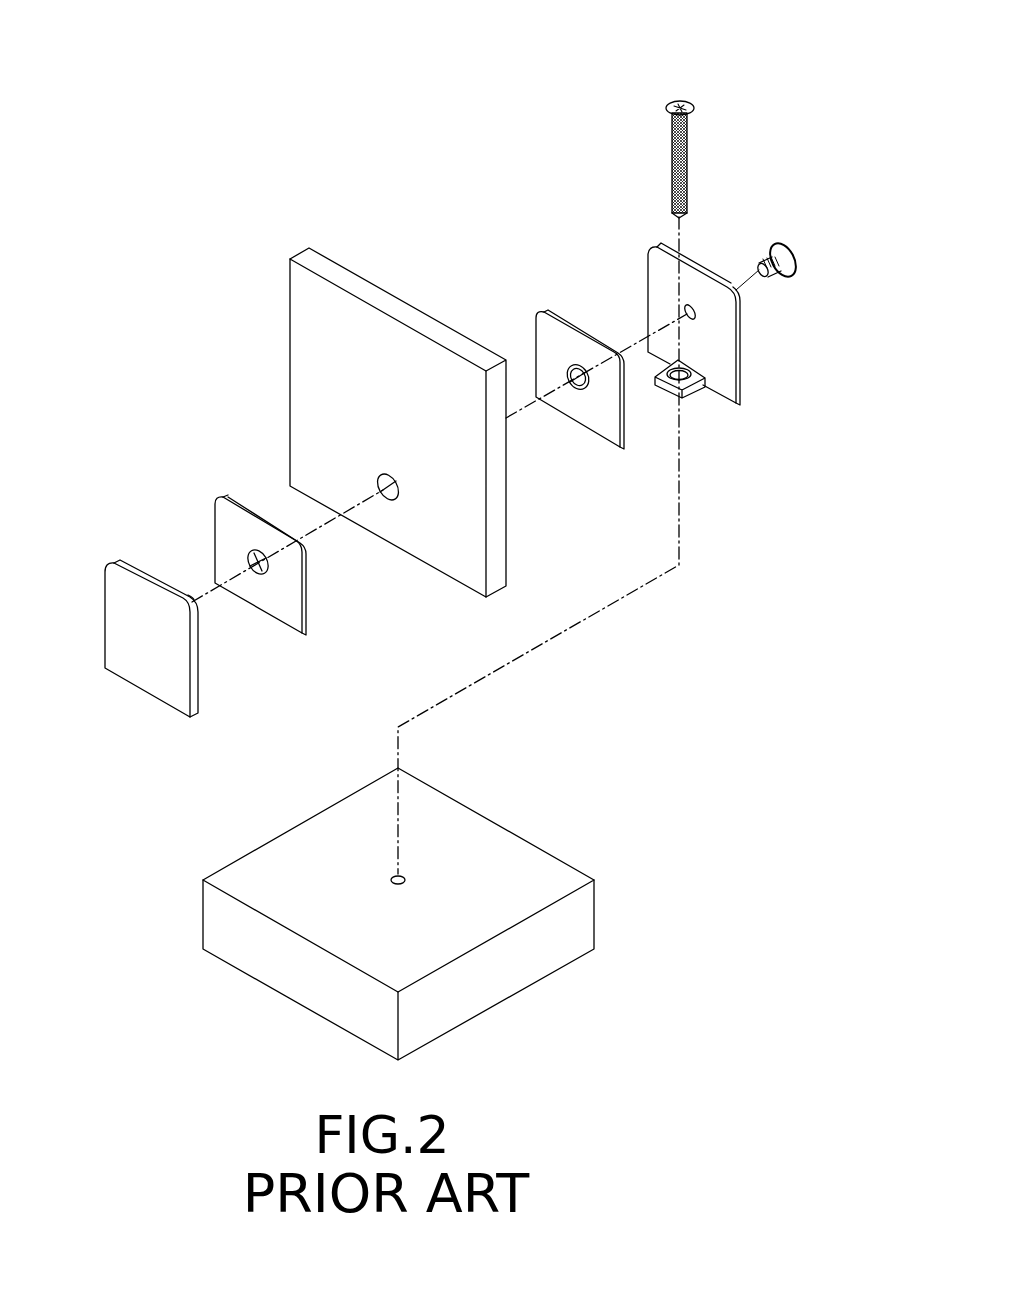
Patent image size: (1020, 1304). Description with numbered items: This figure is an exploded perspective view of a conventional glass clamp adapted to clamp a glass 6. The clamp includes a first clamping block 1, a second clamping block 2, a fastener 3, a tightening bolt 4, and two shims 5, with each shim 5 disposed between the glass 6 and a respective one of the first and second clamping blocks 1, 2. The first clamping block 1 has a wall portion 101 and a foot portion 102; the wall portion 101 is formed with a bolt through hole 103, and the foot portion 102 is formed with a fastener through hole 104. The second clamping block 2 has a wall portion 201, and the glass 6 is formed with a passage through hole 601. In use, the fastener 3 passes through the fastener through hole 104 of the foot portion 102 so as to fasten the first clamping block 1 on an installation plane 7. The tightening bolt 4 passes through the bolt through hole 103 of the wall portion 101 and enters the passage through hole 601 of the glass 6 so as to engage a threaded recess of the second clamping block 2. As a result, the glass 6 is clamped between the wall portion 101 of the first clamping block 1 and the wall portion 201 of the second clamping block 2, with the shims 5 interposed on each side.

The first clamping block 1 is at (714, 330).
The wall portion 101 is at (697, 283).
The foot portion 102 is at (696, 396).
The bolt through hole 103 is at (699, 314).
The fastener through hole 104 is at (684, 376).
The second clamping block 2 is at (132, 640).
The wall portion 201 is at (148, 675).
The fastener 3 is at (690, 100).
The tightening bolt 4 is at (786, 248).
The shim 5 is at (551, 332).
The glass 6 is at (352, 392).
The passage through hole 601 is at (381, 477).
The installation plane 7 is at (532, 866).